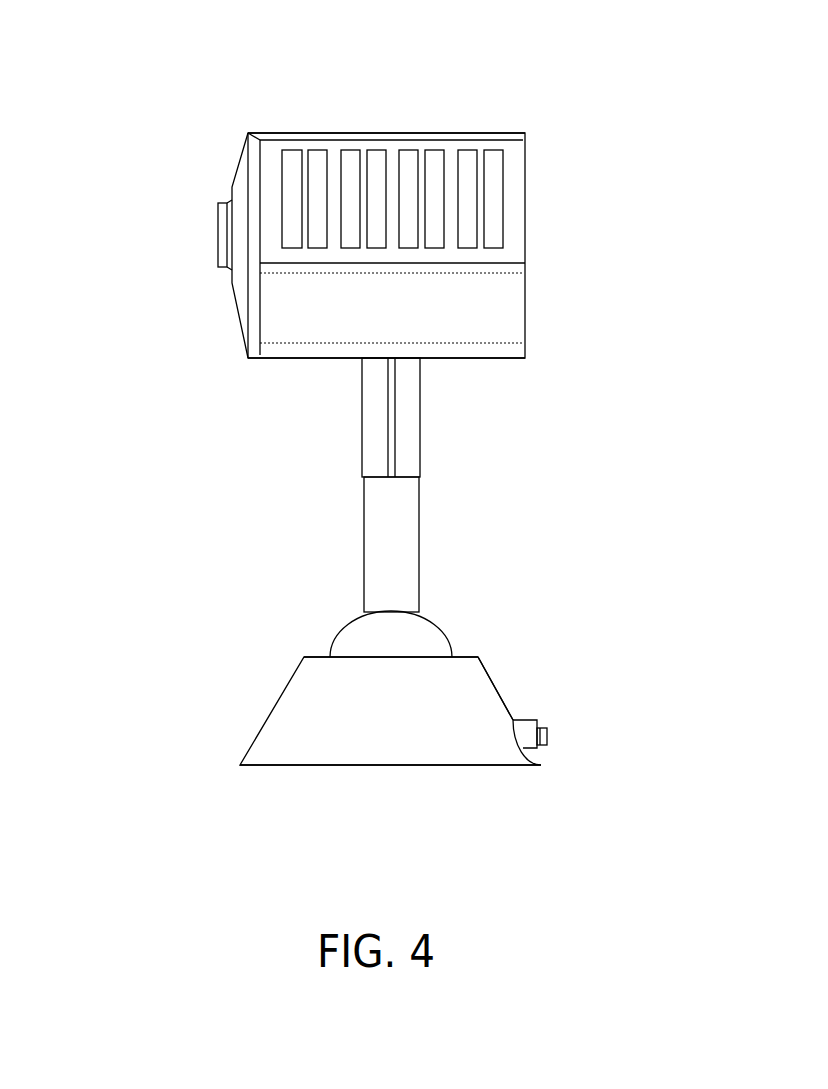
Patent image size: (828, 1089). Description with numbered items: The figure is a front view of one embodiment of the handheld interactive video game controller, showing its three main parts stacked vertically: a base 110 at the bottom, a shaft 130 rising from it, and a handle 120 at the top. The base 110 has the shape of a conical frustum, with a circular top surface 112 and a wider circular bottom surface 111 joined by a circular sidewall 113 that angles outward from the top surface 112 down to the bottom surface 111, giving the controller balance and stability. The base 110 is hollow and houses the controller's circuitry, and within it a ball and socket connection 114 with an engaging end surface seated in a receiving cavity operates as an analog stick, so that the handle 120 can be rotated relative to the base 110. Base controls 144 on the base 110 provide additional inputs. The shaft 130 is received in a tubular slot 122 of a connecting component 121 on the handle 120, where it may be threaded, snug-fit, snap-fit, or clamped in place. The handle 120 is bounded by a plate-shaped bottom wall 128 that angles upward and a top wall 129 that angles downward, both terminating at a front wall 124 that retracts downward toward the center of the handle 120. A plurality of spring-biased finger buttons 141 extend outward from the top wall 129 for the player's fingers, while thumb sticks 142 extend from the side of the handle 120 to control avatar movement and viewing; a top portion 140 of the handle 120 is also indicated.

The base 110 is at (230, 703).
The bottom surface 111 is at (303, 772).
The top surface 112 is at (462, 653).
The circular sidewall 113 is at (507, 692).
The ball and socket connection 114 is at (323, 627).
The handle 120 is at (165, 110).
The connecting component 121 is at (307, 411).
The tubular slot 122 is at (410, 422).
The front wall 124 is at (495, 297).
The bottom wall 128 is at (503, 362).
The top wall 129 is at (270, 153).
The shaft 130 is at (287, 525).
The head top surface 140 is at (438, 102).
The finger buttons 141 is at (293, 142).
The thumb sticks 142 is at (200, 223).
The base controls 144 is at (558, 733).